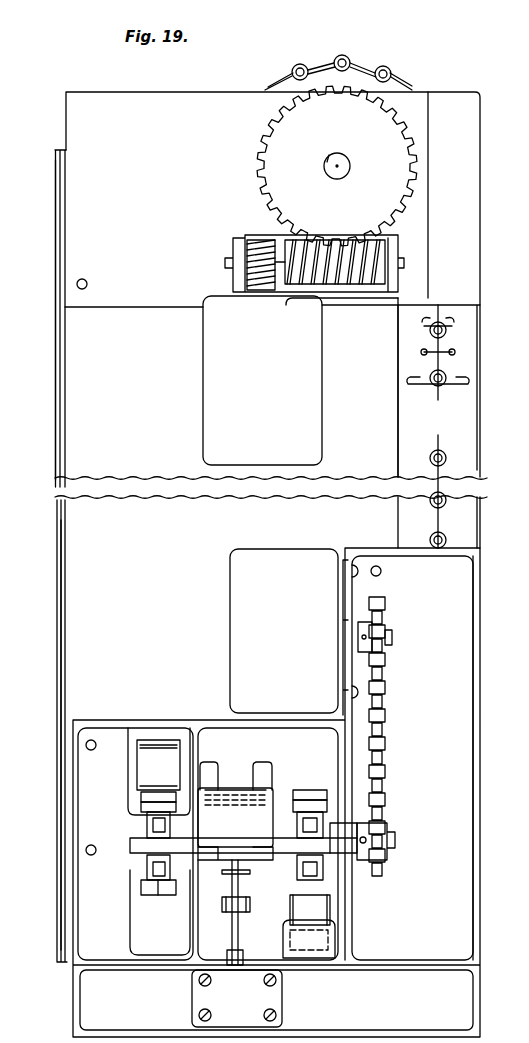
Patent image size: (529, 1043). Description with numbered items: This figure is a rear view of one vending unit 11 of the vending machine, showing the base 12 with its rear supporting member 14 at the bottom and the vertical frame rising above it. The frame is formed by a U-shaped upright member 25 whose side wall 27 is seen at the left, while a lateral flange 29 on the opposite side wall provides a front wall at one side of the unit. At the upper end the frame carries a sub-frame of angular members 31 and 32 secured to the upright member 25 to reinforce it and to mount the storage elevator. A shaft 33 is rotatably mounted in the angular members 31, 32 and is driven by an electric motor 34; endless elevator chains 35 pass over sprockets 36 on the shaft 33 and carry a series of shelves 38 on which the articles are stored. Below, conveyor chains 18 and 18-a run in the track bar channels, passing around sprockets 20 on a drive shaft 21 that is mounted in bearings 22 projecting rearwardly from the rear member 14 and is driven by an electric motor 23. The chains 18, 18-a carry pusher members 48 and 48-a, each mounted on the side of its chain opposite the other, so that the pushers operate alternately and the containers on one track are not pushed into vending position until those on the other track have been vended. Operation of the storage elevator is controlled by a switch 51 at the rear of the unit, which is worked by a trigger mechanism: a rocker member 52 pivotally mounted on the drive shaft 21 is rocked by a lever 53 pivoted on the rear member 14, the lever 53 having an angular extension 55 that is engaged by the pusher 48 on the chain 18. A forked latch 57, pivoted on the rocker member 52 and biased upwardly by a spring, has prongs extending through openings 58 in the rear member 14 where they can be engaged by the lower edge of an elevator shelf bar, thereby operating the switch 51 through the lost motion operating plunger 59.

The vending unit 11 is at (50, 413).
The base 12 is at (63, 935).
The rear supporting member 14 is at (462, 893).
The conveyor chain 18 is at (305, 790).
The conveyor chain 18-a is at (152, 900).
The sprocket 20 is at (160, 870).
The drive shaft 21 is at (395, 840).
The bearing 22 is at (180, 836).
The electric motor 23 is at (230, 633).
The U-shaped upright member 25 is at (50, 556).
The side wall 27 is at (66, 607).
The lateral flange 29 is at (465, 436).
The angular member 31 is at (478, 210).
The angular member 32 is at (70, 124).
The shaft 33 is at (340, 178).
The electric motor 34 is at (207, 378).
The endless elevator chain 35 is at (445, 520).
The sprocket 36 is at (352, 78).
The shelf 38 is at (466, 390).
The pusher member 48 is at (325, 913).
The pusher member 48-a is at (152, 745).
The switch 51 is at (283, 1002).
The rocker member 52 is at (232, 790).
The lever 53 is at (278, 900).
The angular extension 55 is at (331, 958).
The forked latch 57 is at (235, 824).
The opening 58 is at (208, 762).
The lost motion operating plunger 59 is at (228, 922).